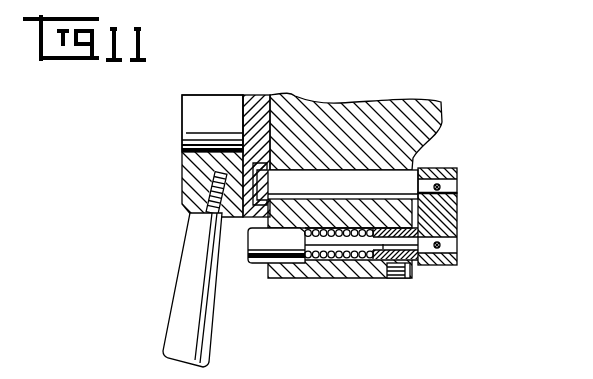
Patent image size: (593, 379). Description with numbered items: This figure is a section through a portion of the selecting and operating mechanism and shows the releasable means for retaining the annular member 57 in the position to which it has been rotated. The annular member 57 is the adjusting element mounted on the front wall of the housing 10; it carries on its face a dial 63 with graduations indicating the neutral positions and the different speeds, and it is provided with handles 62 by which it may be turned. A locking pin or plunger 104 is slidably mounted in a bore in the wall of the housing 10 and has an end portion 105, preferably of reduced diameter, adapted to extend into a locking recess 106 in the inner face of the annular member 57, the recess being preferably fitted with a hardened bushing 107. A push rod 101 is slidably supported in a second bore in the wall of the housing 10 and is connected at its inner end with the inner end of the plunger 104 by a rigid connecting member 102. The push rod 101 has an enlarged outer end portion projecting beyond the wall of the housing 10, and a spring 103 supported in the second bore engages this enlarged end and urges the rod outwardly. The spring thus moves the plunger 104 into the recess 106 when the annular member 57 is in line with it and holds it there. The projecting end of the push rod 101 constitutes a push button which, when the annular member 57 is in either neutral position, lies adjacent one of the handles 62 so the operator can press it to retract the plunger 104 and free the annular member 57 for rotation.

The housing 10 is at (333, 108).
The annular member 57 is at (184, 175).
The handles 62 is at (200, 332).
The dial 63 is at (184, 133).
The push rod 101 is at (373, 264).
The rigid connecting member 102 is at (458, 225).
The spring 103 is at (319, 262).
The locking pin or plunger 104 is at (407, 180).
The end portion 105 is at (343, 184).
The locking recess 106 is at (266, 182).
The hardened bushing 107 is at (266, 103).